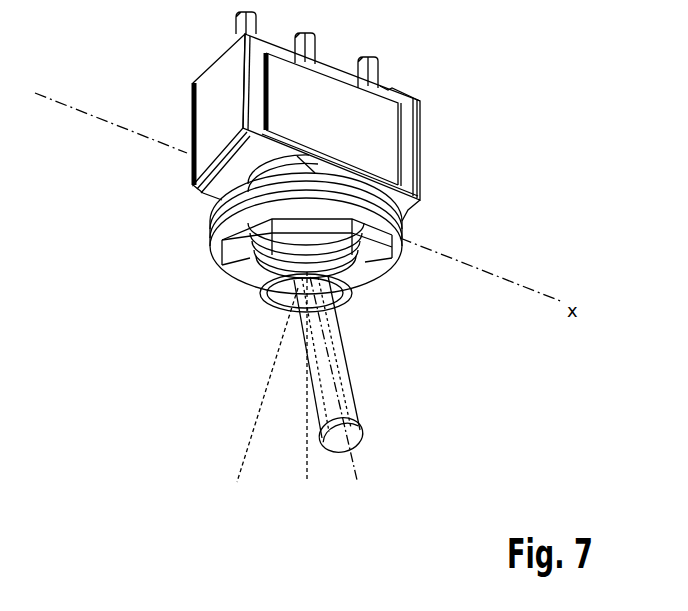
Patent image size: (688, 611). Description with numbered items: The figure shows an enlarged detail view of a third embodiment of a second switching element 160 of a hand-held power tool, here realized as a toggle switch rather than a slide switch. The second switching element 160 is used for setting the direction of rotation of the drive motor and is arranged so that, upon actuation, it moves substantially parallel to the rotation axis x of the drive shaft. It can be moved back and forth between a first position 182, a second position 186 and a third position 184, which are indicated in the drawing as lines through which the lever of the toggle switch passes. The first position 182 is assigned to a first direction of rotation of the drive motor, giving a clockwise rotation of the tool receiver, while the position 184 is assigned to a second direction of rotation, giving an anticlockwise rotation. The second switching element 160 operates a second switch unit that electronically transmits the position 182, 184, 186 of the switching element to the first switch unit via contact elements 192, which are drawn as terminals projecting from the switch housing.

The contact elements 192 is at (378, 73).
The second switching element 160 is at (345, 372).
The first position 182 is at (243, 458).
The second position 184 is at (353, 462).
The second position 186 is at (307, 462).